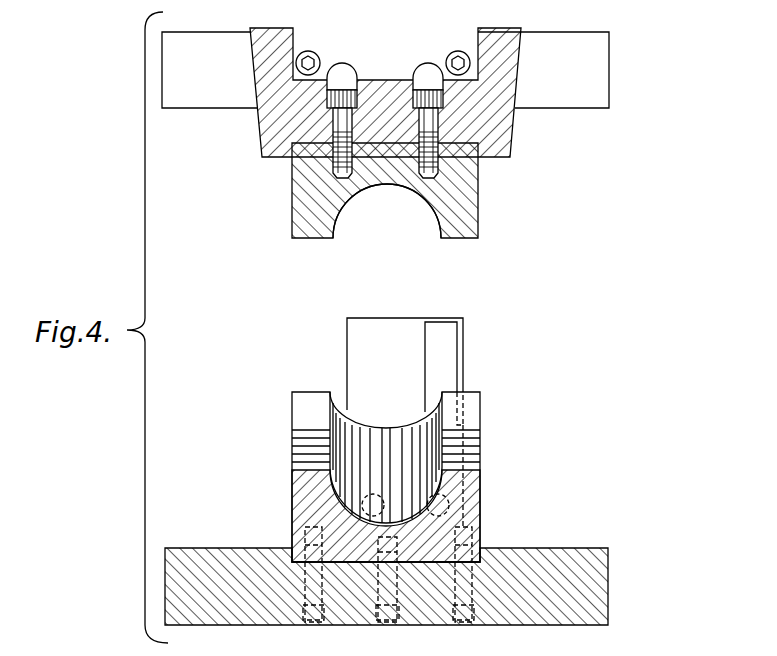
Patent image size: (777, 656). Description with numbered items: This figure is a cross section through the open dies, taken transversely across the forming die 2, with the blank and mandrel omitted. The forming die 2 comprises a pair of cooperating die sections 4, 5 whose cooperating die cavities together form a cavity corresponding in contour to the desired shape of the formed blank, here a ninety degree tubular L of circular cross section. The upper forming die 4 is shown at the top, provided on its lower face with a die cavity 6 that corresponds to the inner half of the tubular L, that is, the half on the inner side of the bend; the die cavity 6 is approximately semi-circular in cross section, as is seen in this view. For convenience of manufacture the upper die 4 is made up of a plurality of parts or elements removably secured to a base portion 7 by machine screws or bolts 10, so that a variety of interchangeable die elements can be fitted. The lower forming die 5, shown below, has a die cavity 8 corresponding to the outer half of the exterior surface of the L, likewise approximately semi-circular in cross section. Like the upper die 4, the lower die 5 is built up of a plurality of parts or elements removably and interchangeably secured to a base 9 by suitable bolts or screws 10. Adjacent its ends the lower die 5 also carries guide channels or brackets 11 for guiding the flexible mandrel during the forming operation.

The forming die 2 is at (487, 22).
The upper forming die section 4 is at (292, 192).
The lower forming die section 5 is at (292, 500).
The die cavity 6 is at (343, 204).
The base portion 7 is at (263, 127).
The die cavity 8 is at (400, 518).
The base 9 is at (192, 553).
The machine screws or bolts 10 is at (308, 621).
The guide channels or brackets 11 is at (415, 333).